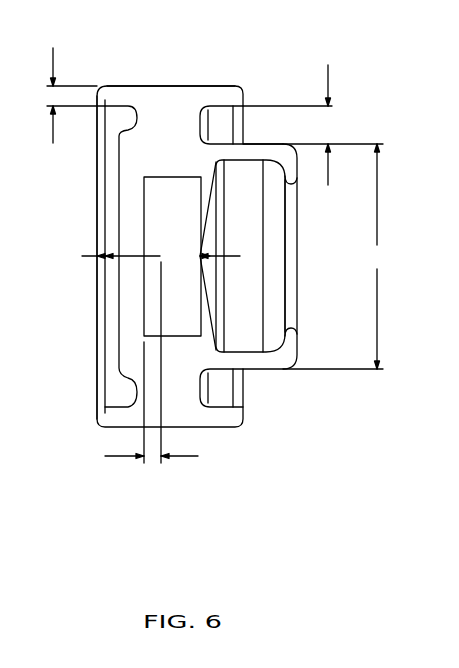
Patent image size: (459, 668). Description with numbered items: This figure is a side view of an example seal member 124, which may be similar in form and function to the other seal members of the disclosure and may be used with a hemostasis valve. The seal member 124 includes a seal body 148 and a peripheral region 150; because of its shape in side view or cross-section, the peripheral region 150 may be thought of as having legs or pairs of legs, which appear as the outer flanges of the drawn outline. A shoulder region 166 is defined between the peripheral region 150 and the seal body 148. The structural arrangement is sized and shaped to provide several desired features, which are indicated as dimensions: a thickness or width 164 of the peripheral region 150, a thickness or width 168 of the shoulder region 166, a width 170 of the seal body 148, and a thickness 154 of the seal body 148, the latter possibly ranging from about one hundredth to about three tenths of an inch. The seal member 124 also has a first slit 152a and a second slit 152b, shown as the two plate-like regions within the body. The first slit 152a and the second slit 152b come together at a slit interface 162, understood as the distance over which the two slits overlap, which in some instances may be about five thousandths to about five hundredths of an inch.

The seal member 124 is at (106, 177).
The seal body 148 is at (127, 219).
The peripheral region 150 is at (213, 82).
The first slit 152a is at (152, 262).
The second slit 152b is at (197, 165).
The thickness of the seal body 154 is at (144, 256).
The slit interface 162 is at (169, 364).
The thickness or width of the peripheral region 164 is at (71, 85).
The shoulder region 166 is at (158, 117).
The thickness or width of the shoulder region 168 is at (313, 125).
The width of the seal body 170 is at (338, 256).